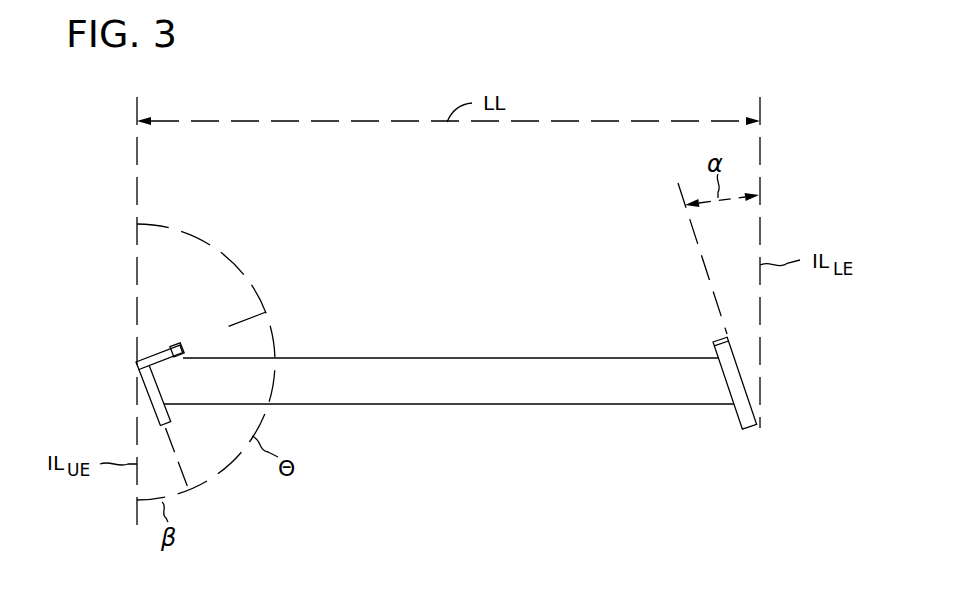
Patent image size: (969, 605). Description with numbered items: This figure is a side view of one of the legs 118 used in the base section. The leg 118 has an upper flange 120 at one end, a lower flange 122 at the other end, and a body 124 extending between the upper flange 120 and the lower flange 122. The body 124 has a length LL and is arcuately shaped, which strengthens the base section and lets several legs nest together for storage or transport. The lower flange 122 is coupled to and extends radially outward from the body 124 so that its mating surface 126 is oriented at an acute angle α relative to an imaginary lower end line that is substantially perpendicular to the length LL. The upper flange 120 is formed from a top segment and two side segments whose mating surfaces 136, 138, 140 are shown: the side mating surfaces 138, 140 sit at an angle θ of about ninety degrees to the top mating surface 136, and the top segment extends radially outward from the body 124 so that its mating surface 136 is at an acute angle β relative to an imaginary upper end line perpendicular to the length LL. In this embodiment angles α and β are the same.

The leg 118 is at (361, 233).
The upper flange 120 is at (131, 348).
The lower flange 122 is at (702, 321).
The body 124 is at (475, 357).
The mating surface 126 is at (736, 358).
The mating surface 136 is at (151, 401).
The mating surface 138 is at (155, 353).
The mating surface 140 is at (180, 347).